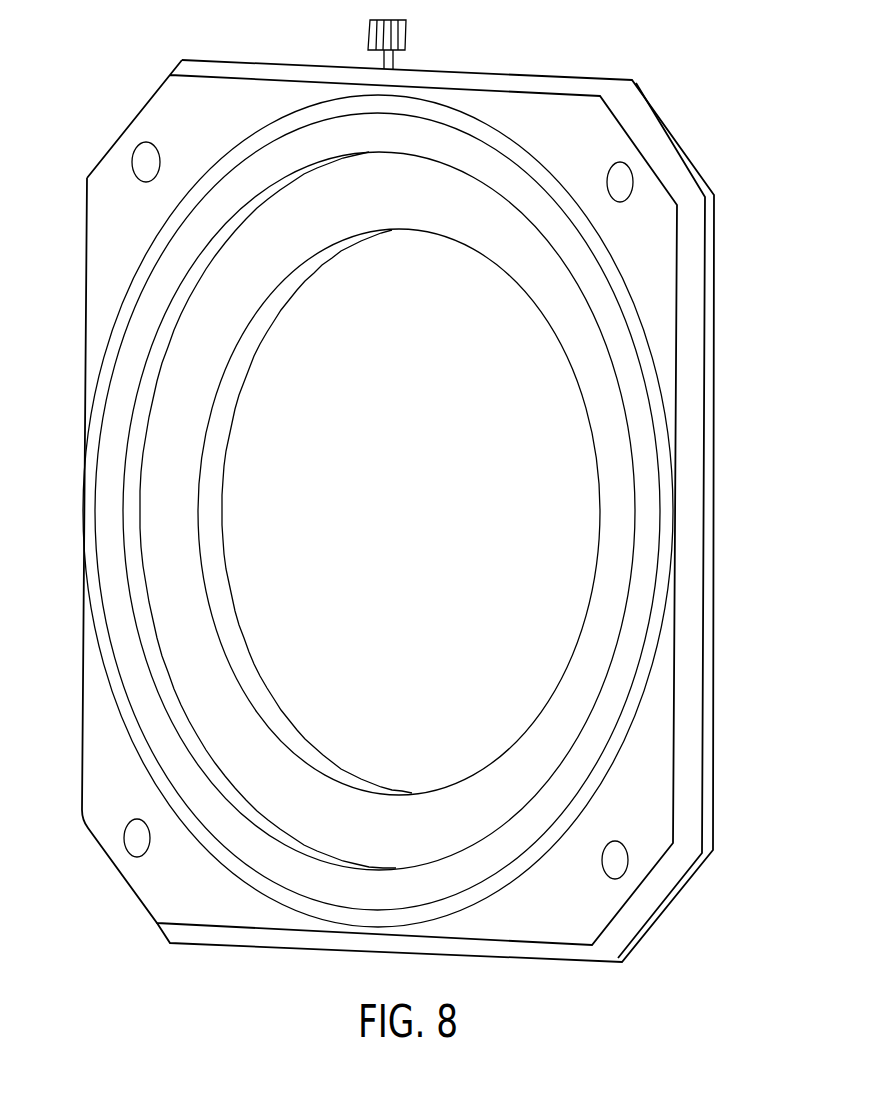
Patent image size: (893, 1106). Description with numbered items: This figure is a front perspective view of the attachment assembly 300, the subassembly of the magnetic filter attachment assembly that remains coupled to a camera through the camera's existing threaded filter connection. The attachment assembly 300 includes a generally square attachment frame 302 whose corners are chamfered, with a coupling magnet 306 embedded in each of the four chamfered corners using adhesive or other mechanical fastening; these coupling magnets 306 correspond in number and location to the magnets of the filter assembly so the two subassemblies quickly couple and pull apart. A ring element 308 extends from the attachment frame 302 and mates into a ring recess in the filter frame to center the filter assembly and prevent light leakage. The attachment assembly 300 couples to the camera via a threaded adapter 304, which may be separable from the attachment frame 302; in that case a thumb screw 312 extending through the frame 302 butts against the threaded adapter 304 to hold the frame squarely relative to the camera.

The attachment assembly 300 is at (410, 482).
The attachment frame 302 is at (712, 738).
The threaded adapter 304 is at (612, 525).
The coupling magnets 306 is at (145, 157).
The ring element 308 is at (636, 325).
The thumb screw 312 is at (424, 60).